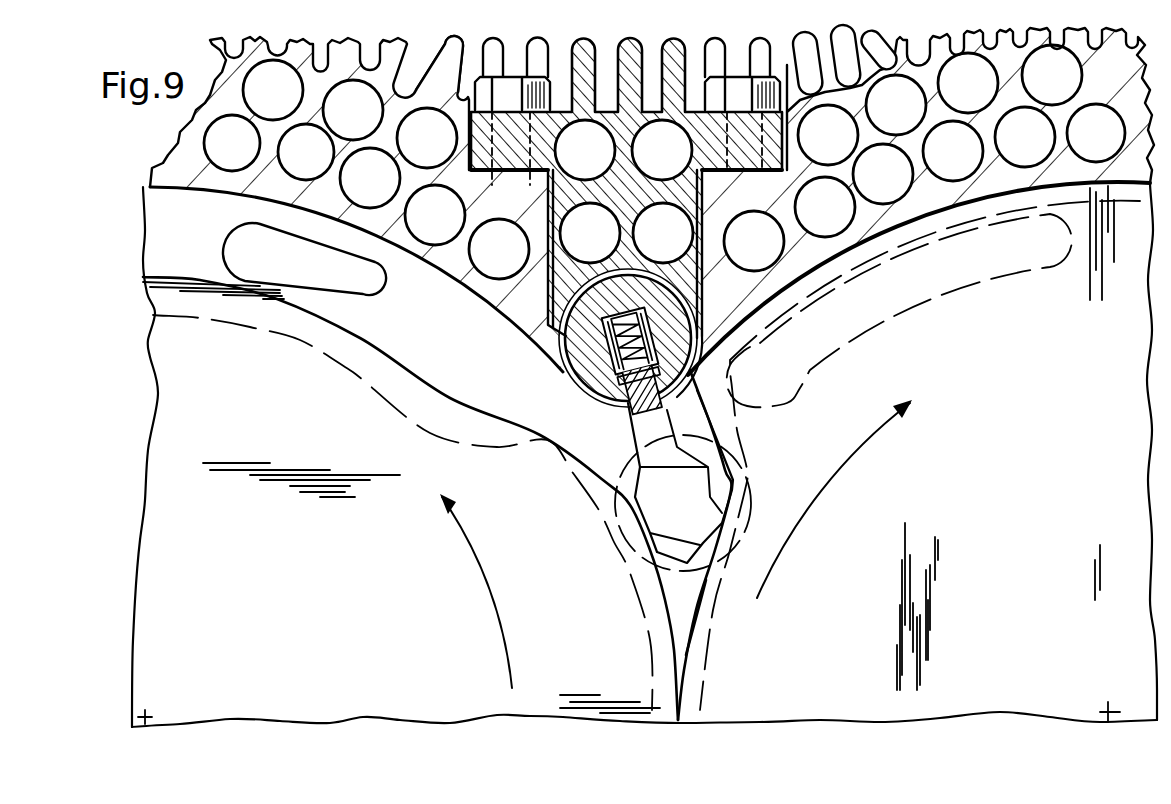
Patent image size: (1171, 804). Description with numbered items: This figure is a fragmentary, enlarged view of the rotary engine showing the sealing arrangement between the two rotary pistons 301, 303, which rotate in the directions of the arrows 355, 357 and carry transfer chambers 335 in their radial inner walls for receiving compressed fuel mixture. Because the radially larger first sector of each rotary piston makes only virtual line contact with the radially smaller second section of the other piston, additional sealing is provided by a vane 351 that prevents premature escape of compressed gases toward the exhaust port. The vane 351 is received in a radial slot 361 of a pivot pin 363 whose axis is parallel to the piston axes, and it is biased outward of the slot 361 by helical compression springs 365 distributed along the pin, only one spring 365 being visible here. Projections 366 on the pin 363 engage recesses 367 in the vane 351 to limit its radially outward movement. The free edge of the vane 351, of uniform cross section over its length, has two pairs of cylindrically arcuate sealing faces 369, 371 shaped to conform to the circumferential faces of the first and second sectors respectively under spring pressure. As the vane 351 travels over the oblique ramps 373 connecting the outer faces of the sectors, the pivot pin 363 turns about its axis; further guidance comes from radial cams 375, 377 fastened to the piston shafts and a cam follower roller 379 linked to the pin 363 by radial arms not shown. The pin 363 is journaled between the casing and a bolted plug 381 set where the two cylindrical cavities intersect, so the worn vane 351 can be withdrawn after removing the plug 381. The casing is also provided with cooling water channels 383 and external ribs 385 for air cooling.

The rotary piston 301 is at (247, 612).
The rotary piston 303 is at (1045, 499).
The transfer chamber 335 is at (372, 280).
The vane 351 is at (723, 424).
The arrow 355 is at (827, 487).
The arrow 357 is at (490, 590).
The radial slot 361 is at (566, 356).
The pivot pin 363 is at (657, 298).
The helical compression spring 365 is at (621, 316).
The projection 366 is at (615, 402).
The recess 367 is at (573, 384).
The cylindrically arcuate sealing face 369 is at (700, 484).
The cylindrically arcuate sealing face 371 is at (655, 553).
The oblique ramp 373 is at (552, 462).
The radial cam 375 is at (590, 495).
The radial cam 377 is at (722, 585).
The cam follower roller 379 is at (750, 507).
The plug 381 is at (622, 62).
The cooling water channel 383 is at (230, 160).
The external rib 385 is at (848, 38).